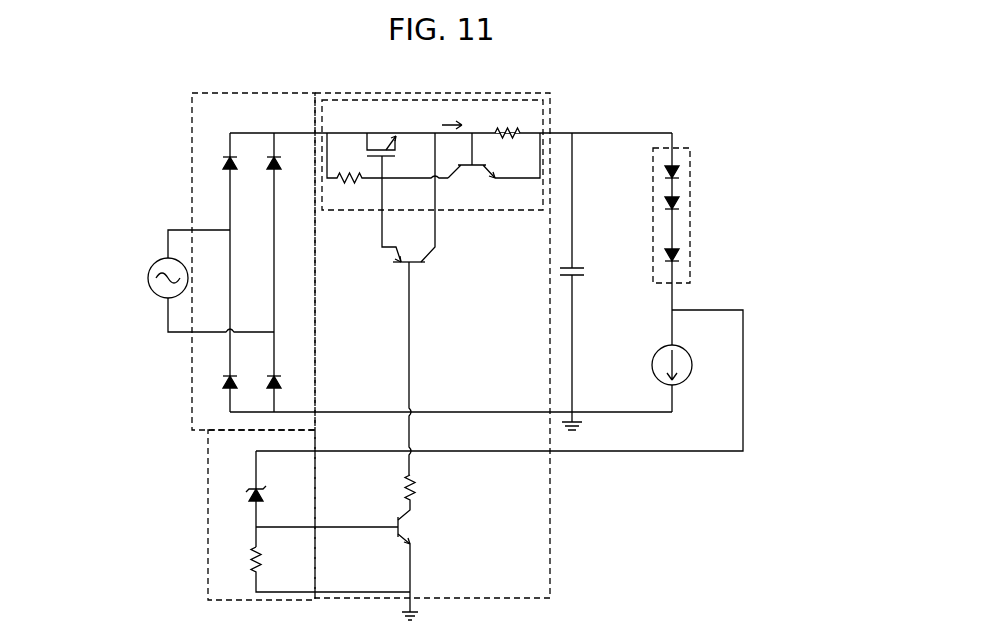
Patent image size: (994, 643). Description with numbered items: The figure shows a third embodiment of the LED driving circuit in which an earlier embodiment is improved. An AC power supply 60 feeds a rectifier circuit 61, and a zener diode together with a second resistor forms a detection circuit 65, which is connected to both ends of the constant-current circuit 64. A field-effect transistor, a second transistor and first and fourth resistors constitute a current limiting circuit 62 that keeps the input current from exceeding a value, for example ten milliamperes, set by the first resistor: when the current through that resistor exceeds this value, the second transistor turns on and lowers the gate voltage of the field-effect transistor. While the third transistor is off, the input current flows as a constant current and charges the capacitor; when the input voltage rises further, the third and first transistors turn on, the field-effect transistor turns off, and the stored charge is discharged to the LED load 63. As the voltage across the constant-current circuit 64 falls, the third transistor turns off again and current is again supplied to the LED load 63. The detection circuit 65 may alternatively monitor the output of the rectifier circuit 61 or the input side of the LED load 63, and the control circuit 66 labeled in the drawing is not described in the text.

The AC power supply 60 is at (161, 281).
The rectifier circuit 61 is at (192, 128).
The current limiting circuit 62 is at (457, 212).
The LED load 63 is at (705, 239).
The constant-current circuit 64 is at (499, 380).
The detection circuit 65 is at (208, 530).
The control circuit 66 is at (553, 543).